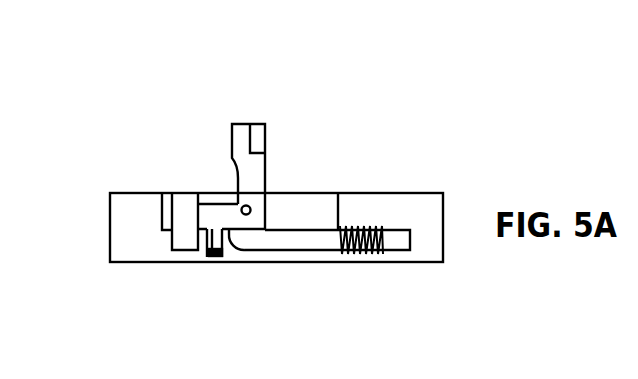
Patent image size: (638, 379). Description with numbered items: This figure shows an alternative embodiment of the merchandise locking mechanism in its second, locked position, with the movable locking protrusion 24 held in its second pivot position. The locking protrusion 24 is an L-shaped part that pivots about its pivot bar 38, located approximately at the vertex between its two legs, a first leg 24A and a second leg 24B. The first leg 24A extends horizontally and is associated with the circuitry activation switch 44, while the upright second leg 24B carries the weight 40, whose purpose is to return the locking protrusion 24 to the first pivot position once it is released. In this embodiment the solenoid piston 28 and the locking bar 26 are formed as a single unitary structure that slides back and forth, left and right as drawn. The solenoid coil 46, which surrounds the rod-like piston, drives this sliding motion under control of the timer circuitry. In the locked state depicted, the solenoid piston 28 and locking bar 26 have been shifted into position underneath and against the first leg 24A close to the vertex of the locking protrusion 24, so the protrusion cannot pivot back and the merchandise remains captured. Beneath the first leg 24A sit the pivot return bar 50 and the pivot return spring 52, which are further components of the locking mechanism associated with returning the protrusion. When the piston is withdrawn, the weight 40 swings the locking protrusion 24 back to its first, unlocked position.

The movable locking protrusion 24 is at (232, 123).
The first leg 24A is at (234, 204).
The second leg 24B is at (270, 177).
The weight 40 is at (257, 133).
The pivot bar 38 is at (243, 206).
The circuitry activation switch 44 is at (178, 240).
The locking bar 26 is at (250, 243).
The solenoid piston 28 is at (318, 248).
The solenoid coil 46 is at (363, 250).
The pivot return bar 50 is at (208, 247).
The pivot return spring 52 is at (213, 258).